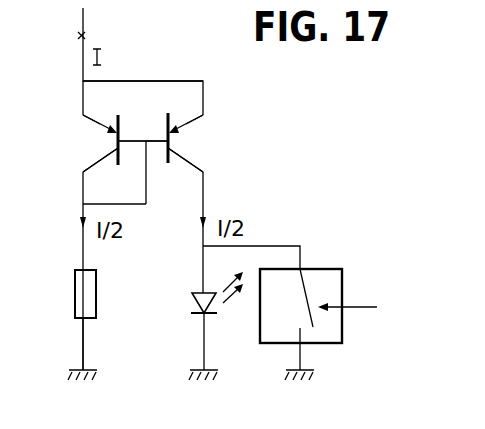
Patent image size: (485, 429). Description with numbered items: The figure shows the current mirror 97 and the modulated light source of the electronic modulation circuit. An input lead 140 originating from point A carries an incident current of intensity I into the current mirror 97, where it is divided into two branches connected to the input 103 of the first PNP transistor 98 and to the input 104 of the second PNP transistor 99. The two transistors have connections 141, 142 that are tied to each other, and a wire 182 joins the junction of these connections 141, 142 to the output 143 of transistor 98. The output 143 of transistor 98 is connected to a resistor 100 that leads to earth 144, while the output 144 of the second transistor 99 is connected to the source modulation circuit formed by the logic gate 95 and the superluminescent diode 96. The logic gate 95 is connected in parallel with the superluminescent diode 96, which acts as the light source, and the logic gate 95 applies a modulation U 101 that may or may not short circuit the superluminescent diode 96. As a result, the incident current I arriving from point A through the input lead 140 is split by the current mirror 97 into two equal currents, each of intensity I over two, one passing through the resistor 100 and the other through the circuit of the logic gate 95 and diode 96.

The input lead 140 is at (83, 62).
The current mirror 97 is at (165, 58).
The first PNP transistor 98 is at (92, 141).
The second PNP transistor 99 is at (197, 139).
The input of first transistor 103 is at (88, 118).
The input of second transistor 104 is at (197, 119).
The connection of first transistor 141 is at (131, 141).
The connection of second transistor 142 is at (153, 144).
The output of first transistor 143 is at (94, 164).
The output of second transistor 144 is at (200, 162).
The wire 182 is at (146, 206).
The resistor 100 is at (75, 300).
The superluminescent diode 96 is at (192, 305).
The logic gate 95 is at (320, 269).
The modulation U 101 is at (377, 307).